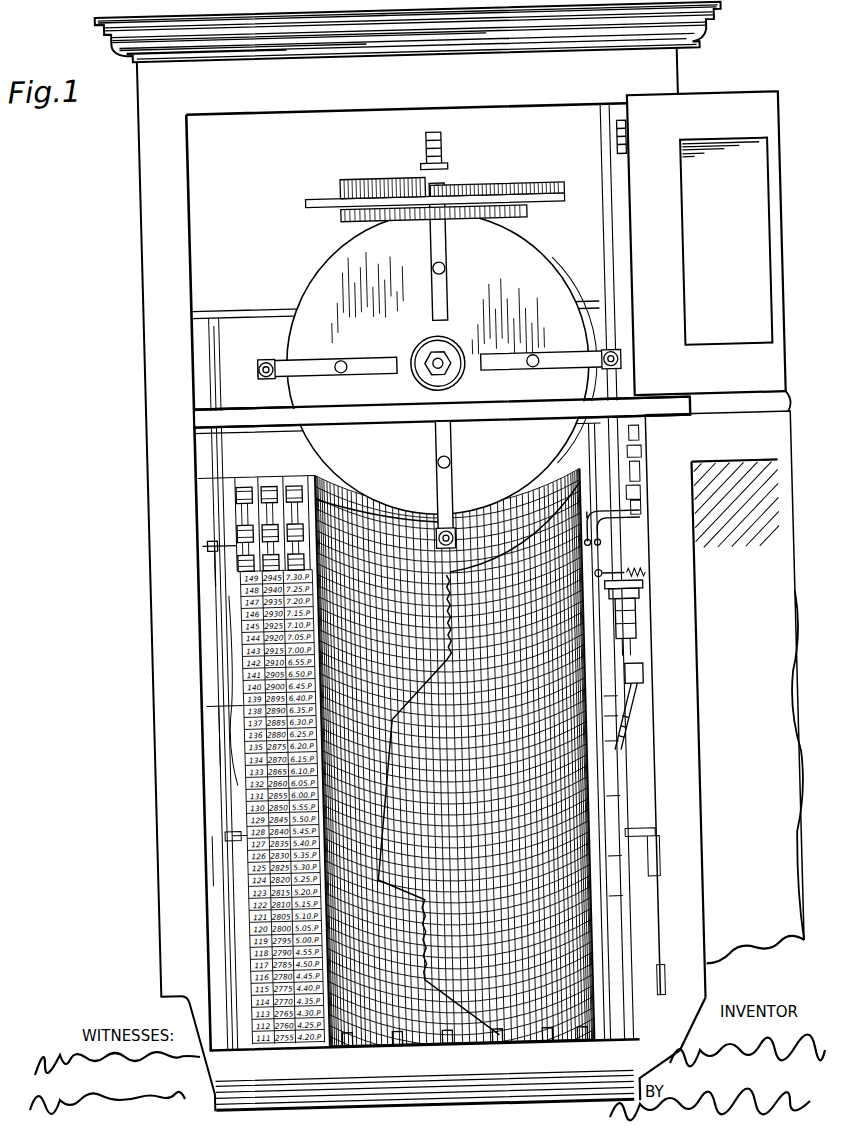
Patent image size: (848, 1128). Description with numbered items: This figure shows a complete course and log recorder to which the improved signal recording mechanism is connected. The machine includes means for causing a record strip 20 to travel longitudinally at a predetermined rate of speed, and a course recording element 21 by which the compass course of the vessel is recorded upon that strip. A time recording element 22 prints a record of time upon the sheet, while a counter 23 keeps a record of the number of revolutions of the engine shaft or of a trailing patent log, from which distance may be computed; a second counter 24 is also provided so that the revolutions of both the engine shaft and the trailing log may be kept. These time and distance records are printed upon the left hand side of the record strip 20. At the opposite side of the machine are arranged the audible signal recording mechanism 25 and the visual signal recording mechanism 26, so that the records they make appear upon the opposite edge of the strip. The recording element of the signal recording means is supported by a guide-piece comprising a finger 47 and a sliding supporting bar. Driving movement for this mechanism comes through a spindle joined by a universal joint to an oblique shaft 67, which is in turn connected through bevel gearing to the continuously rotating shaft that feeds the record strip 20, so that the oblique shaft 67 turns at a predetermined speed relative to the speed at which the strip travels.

The record strip 20 is at (452, 1009).
The course recording element 21 is at (442, 363).
The time recording element 22 is at (292, 532).
The counter 23 is at (272, 532).
The second counter 24 is at (247, 527).
The audible signal recording mechanism 25 is at (642, 604).
The visual signal recording mechanism 26 is at (629, 525).
The finger 47 is at (600, 577).
The oblique shaft 67 is at (628, 731).